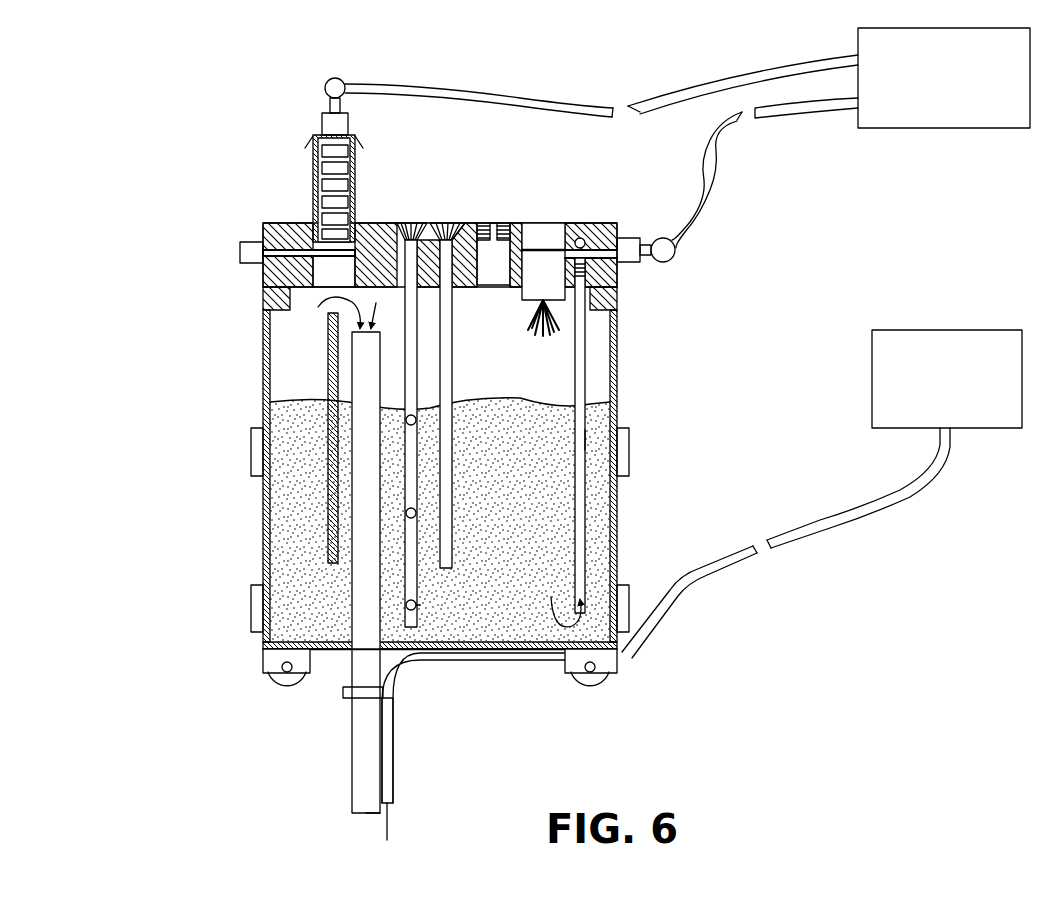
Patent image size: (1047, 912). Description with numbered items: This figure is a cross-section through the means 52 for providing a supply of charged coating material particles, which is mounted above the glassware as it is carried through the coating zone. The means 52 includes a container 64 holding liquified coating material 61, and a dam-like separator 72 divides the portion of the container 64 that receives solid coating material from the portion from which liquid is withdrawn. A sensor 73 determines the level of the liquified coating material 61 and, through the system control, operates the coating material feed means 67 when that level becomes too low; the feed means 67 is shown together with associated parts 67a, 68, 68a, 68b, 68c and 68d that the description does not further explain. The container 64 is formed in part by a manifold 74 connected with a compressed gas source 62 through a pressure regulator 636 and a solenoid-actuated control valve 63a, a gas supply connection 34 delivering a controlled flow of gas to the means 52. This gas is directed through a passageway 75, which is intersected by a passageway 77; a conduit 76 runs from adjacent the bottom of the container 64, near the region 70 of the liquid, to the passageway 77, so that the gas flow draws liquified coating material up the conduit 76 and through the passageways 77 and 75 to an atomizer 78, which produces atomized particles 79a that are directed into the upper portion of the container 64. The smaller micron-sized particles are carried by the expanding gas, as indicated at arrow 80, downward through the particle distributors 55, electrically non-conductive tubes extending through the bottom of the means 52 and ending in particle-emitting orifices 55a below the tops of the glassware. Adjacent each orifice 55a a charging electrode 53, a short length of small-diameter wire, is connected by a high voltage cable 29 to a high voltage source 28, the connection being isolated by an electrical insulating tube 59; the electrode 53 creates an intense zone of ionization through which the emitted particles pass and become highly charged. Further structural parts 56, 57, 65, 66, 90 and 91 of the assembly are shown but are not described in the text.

The high voltage source 28 is at (995, 428).
The high voltage cable 29 is at (805, 526).
The gas supply hose 34 is at (712, 170).
The means for providing a supply of charged coating material particles 52 is at (211, 200).
The charging electrode 53 is at (389, 822).
The particle distributor 55 is at (352, 798).
The particle-emitting orifice 55a is at (370, 818).
The collar 56 is at (345, 700).
The base plate 57 is at (263, 648).
The electrical insulating tube 59 is at (393, 718).
The liquified coating material 61 is at (500, 511).
The compressed gas source 62 is at (892, 128).
The solenoid-actuated control valve 63a is at (636, 238).
The pressure regulator 636 is at (674, 258).
The container 64 is at (292, 376).
The upper side rail 65 is at (251, 455).
The lower side rail 66 is at (251, 608).
The coating material feed means 67 is at (318, 120).
The valve rings 67a is at (313, 219).
The gas tube with check balls 68 is at (452, 374).
The valve cap 68a is at (322, 124).
The hose coupling ball 68b is at (336, 78).
The inlet port 68c is at (240, 253).
The chamber 68d is at (322, 270).
The level region 70 is at (578, 442).
The dam-like separator 72 is at (330, 364).
The sensor 73 is at (420, 605).
The manifold 74 is at (576, 236).
The passageway 75 is at (588, 235).
The conduit 76 is at (612, 376).
The passageway 77 is at (614, 290).
The atomizer 78 is at (522, 305).
The atomized particles of coating material 79a is at (548, 344).
The arrow indicating particle flow 80 is at (317, 437).
The wheel 90 is at (282, 688).
The wheel bracket 91 is at (265, 672).